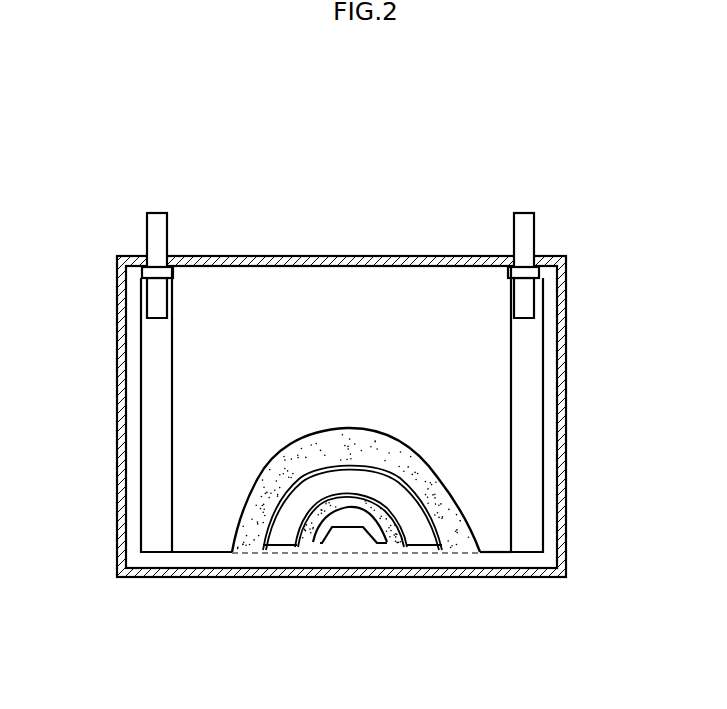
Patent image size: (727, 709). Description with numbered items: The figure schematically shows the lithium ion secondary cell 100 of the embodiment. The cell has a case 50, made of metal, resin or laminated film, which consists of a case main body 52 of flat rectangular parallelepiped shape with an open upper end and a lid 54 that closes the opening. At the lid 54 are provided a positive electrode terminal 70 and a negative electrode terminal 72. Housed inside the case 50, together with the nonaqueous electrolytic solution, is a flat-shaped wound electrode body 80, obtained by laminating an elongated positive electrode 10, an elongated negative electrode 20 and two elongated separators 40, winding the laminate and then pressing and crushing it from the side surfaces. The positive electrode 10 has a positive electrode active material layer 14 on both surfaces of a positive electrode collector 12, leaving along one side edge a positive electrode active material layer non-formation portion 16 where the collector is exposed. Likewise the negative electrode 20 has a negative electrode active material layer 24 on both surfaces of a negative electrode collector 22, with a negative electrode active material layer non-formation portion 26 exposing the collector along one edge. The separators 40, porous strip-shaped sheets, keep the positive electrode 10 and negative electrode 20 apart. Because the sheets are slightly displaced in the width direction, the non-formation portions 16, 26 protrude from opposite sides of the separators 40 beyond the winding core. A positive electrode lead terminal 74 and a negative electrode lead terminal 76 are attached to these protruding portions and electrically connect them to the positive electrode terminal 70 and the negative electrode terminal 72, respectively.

The lithium ion secondary cell 100 is at (563, 154).
The case 50 is at (566, 413).
The case main body 52 is at (565, 532).
The lid 54 is at (247, 262).
The positive electrode terminal 70 is at (158, 222).
The negative electrode terminal 72 is at (522, 222).
The positive electrode lead terminal 74 is at (153, 308).
The negative electrode lead terminal 76 is at (525, 308).
The positive electrode collector 12 is at (150, 390).
The positive electrode active material layer non-formation portion 16 is at (150, 467).
The negative electrode collector 22 is at (535, 368).
The negative electrode active material layer non-formation portion 26 is at (530, 485).
The wound electrode body 80 is at (500, 553).
The positive electrode active material layer 14 is at (243, 552).
The positive electrode 10 is at (456, 541).
The separator 40 is at (200, 535).
The negative electrode 20 is at (393, 543).
The negative electrode active material layer 24 is at (313, 535).